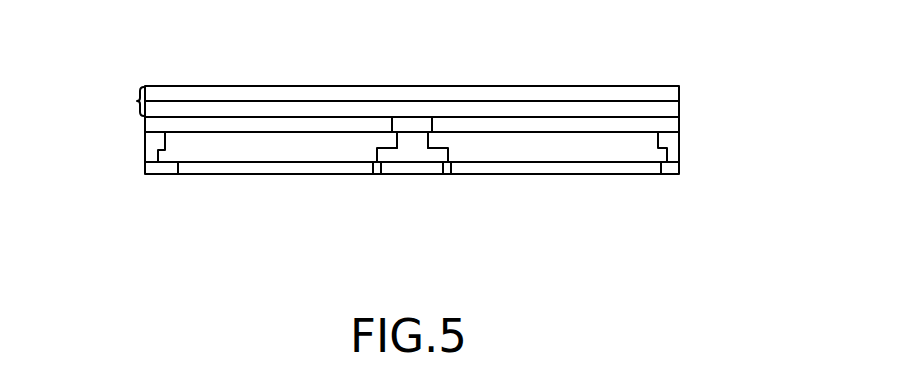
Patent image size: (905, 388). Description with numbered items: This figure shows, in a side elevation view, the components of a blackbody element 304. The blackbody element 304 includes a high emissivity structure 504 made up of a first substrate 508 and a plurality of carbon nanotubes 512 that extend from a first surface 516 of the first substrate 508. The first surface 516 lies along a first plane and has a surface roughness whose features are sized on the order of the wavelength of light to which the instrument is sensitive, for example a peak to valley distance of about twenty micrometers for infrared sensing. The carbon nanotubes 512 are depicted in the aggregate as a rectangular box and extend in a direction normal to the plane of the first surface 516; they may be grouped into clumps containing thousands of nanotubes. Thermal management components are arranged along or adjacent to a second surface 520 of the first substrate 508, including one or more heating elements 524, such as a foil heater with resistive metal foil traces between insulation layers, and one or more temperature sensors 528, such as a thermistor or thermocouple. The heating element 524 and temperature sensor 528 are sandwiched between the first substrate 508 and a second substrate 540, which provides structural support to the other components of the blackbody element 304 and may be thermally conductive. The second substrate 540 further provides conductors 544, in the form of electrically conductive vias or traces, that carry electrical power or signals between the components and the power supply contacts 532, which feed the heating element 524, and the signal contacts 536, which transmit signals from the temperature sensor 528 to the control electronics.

The blackbody element 304 is at (680, 80).
The high emissivity structure 504 is at (137, 101).
The first substrate 508 is at (172, 102).
The nanotubes 512 is at (243, 88).
The first surface 516 is at (373, 97).
The second surface 520 is at (647, 118).
The heating element 524 is at (668, 125).
The temperature sensor 528 is at (416, 127).
The power supply contacts 532 is at (165, 167).
The signal contacts 536 is at (377, 173).
The second substrate 540 is at (518, 150).
The conductors 544 is at (145, 149).